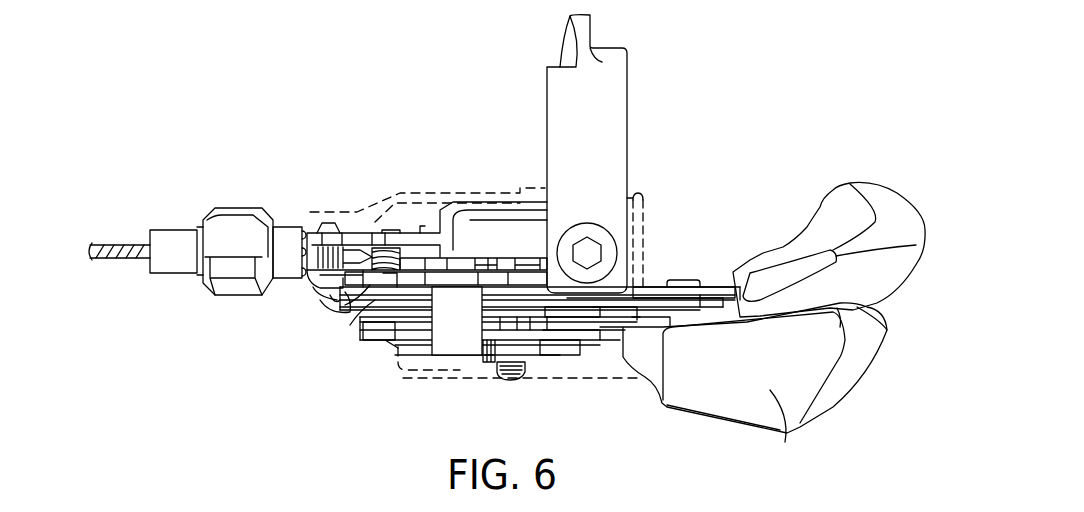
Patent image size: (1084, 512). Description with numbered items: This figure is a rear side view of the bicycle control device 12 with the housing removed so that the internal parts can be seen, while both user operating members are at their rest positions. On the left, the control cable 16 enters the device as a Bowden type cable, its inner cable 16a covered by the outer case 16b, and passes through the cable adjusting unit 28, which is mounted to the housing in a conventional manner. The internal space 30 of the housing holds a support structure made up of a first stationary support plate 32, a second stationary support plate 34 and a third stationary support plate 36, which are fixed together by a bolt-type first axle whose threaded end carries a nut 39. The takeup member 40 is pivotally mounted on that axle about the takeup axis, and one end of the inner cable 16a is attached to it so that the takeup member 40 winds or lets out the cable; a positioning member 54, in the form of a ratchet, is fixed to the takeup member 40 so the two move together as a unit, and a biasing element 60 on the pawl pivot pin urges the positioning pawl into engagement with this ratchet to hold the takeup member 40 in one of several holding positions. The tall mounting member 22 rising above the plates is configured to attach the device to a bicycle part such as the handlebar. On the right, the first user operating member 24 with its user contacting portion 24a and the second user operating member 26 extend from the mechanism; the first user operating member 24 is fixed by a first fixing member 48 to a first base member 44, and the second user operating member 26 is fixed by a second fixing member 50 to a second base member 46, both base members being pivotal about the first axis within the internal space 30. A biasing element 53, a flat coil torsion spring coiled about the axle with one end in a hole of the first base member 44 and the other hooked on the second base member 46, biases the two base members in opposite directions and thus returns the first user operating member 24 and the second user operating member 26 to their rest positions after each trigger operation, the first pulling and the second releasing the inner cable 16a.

The bicycle control device 12 is at (786, 86).
The control cable 16 is at (165, 277).
The inner cable 16a is at (117, 244).
The outer case 16b is at (170, 230).
The mounting member 22 is at (632, 91).
The first user operating member 24 is at (711, 425).
The user contacting portion 24a is at (791, 432).
The second user operating member 26 is at (812, 212).
The cable adjusting unit 28 is at (241, 206).
The internal space 30 is at (410, 222).
The first stationary support plate 32 is at (368, 235).
The second stationary support plate 34 is at (345, 308).
The third stationary support plate 36 is at (500, 347).
The nut 39 is at (520, 365).
The takeup member 40 is at (452, 266).
The first base member 44 is at (379, 325).
The second base member 46 is at (661, 289).
The first fixing member 48 is at (558, 350).
The second fixing member 50 is at (681, 281).
The biasing element 53 is at (540, 305).
The positioning member 54 is at (447, 290).
The biasing element 60 is at (377, 292).